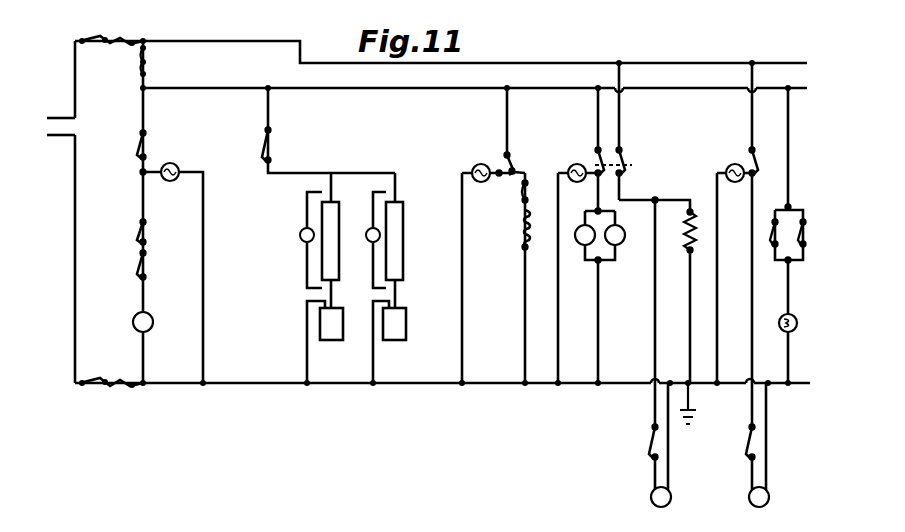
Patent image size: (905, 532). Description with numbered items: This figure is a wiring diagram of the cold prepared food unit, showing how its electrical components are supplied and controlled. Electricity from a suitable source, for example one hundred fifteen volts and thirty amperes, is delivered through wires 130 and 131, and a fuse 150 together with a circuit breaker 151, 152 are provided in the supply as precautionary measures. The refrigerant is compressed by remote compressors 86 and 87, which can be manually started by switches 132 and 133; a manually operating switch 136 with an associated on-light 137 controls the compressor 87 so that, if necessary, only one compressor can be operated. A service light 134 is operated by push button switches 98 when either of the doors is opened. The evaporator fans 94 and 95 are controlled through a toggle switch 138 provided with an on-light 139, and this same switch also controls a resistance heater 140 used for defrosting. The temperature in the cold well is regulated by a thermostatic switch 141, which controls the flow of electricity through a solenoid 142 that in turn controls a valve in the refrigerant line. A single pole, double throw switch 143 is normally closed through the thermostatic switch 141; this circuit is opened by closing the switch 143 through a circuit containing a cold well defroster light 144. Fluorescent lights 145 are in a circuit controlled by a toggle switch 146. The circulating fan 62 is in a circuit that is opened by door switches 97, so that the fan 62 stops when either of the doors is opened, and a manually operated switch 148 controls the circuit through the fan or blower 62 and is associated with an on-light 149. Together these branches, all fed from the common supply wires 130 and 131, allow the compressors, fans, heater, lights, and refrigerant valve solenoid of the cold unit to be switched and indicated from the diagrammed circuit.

The wire 130 is at (60, 117).
The wire 131 is at (60, 137).
The circuit breaker 151 is at (117, 30).
The circuit breaker 152 is at (114, 396).
The fuse 150 is at (148, 69).
The manually operated switch 148 is at (147, 147).
The on-light 149 is at (180, 165).
The door switches 97 is at (147, 234).
The circulating fan 62 is at (153, 324).
The toggle switch 146 is at (273, 143).
The fluorescent lights 145 is at (338, 222).
The cold well defroster light 144 is at (476, 163).
The single pole, double throw switch 143 is at (510, 161).
The thermostatic switch 141 is at (520, 196).
The solenoid 142 is at (520, 246).
The on-light 139 is at (573, 164).
The toggle switch 138 is at (624, 152).
The evaporator fan 94 is at (581, 250).
The evaporator fan 95 is at (624, 246).
The resistance heater 140 is at (694, 212).
The switch 132 is at (648, 440).
The remote compressor 86 is at (672, 496).
The on-light 137 is at (730, 164).
The manually operating switch 136 is at (757, 160).
The switch 133 is at (745, 440).
The remote compressor 87 is at (770, 496).
The push button switches 98 is at (772, 226).
The service light 134 is at (797, 321).